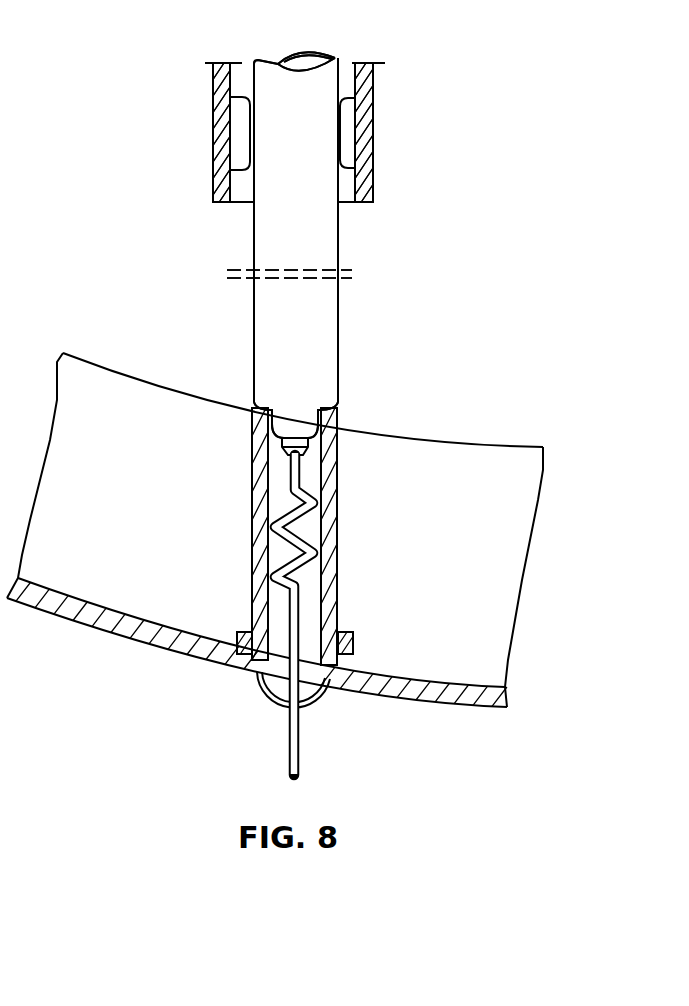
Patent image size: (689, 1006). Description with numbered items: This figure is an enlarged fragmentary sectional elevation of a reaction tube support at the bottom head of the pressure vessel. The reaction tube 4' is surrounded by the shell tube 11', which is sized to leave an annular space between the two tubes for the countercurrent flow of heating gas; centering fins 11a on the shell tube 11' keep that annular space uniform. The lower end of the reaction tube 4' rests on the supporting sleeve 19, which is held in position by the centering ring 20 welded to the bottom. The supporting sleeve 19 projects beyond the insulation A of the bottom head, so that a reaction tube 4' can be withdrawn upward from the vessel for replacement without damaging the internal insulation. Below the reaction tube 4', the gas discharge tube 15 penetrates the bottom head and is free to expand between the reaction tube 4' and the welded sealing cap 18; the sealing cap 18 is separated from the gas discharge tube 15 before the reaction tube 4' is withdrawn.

The insulation A is at (502, 570).
The shell tube 11' is at (323, 132).
The centering fins 11a is at (346, 133).
The reaction tube 4' is at (328, 245).
The supporting sleeve 19 is at (337, 422).
The gas discharge tube 15 is at (310, 500).
The centering ring 20 is at (355, 653).
The sealing cap 18 is at (323, 704).